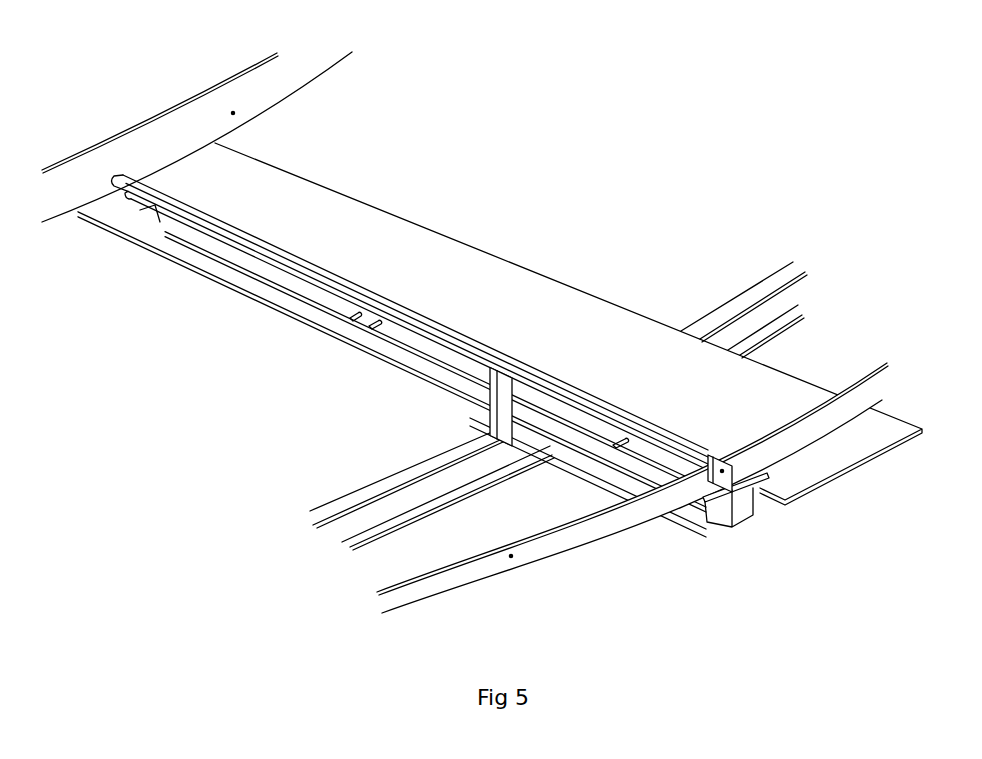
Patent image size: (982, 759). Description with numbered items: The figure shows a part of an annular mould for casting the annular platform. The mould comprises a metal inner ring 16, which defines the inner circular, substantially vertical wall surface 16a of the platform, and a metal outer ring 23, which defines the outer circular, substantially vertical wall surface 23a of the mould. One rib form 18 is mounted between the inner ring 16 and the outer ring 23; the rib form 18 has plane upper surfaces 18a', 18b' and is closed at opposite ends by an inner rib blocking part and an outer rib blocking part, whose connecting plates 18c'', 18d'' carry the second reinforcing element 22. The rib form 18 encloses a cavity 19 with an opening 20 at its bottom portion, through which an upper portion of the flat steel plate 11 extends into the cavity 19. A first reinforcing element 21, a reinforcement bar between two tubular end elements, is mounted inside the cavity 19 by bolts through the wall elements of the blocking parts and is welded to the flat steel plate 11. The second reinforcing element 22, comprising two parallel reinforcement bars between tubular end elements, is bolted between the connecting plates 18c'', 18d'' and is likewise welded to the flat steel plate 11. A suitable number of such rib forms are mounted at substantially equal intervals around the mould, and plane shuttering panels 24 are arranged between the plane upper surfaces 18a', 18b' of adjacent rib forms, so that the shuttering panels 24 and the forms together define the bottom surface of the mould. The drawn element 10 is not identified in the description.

The lower transverse rail 10 is at (392, 487).
The flat steel plate 11 is at (503, 390).
The inner ring 16 is at (173, 110).
The inner circular substantially vertical wall surface 16a is at (185, 129).
The rib form 18 is at (330, 317).
The plane upper surface 18a' is at (475, 438).
The plane upper surface 18b' is at (415, 316).
The connecting plate 18c'' is at (160, 114).
The connecting plate 18d'' is at (744, 456).
The cavity 19 is at (242, 258).
The opening 20 is at (488, 386).
The first reinforcing element 21 is at (273, 285).
The second reinforcing element 22 is at (213, 220).
The outer ring 23 is at (628, 506).
The outer circular substantially vertical wall surface 23a is at (852, 387).
The shuttering panel 24 is at (483, 280).